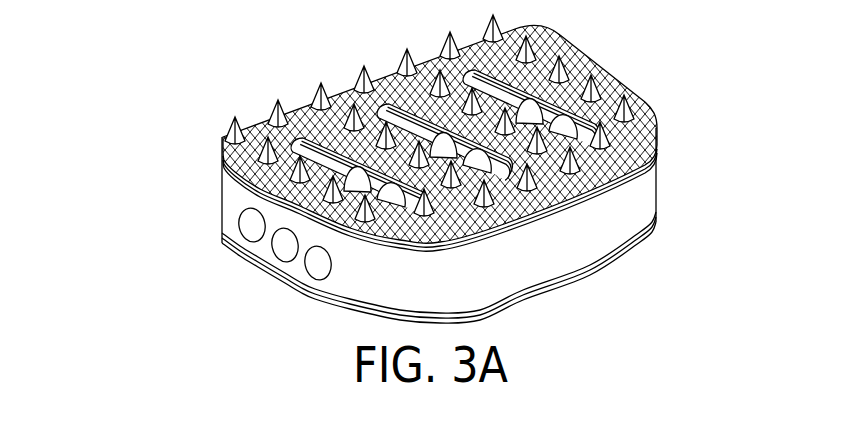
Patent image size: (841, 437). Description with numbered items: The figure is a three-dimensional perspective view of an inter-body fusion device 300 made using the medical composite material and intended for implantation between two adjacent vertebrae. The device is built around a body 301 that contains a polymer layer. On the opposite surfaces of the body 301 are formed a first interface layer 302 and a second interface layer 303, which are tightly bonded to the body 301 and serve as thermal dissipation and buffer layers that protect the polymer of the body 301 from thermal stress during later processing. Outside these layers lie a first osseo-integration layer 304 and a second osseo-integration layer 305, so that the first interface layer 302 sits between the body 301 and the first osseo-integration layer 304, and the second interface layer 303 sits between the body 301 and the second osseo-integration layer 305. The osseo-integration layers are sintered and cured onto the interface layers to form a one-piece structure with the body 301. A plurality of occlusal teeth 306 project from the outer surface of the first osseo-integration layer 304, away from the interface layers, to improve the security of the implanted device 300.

The inter-body fusion device 300 is at (62, 34).
The body 301 is at (647, 197).
The first interface layer 302 is at (659, 168).
The second interface layer 303 is at (656, 226).
The first osseo-integration layer 304 is at (643, 108).
The second osseo-integration layer 305 is at (652, 244).
The occlusal teeth 306 is at (643, 108).